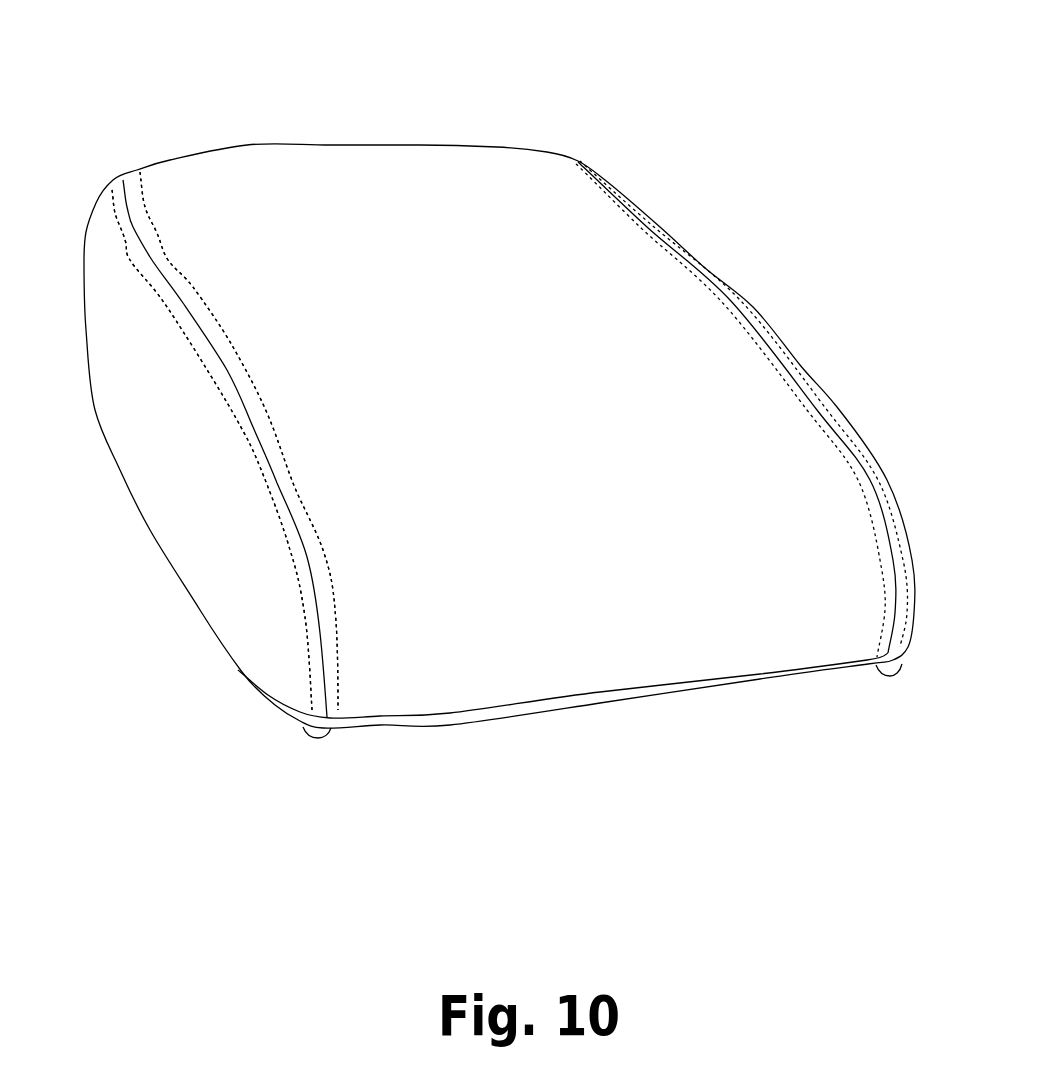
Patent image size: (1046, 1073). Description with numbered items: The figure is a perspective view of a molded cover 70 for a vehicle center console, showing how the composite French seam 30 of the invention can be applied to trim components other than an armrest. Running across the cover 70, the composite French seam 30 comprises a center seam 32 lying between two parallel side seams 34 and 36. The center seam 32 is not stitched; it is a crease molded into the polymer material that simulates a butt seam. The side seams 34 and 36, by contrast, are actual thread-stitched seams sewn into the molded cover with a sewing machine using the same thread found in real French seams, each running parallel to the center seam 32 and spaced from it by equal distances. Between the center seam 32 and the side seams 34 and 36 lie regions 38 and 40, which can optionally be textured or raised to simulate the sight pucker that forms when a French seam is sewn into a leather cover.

The cover 70 is at (458, 118).
The composite French seam 30 is at (598, 718).
The center seam 32 is at (322, 652).
The side seam 34 is at (312, 688).
The side seam 36 is at (340, 698).
The region 38 is at (303, 630).
The region 40 is at (332, 650).